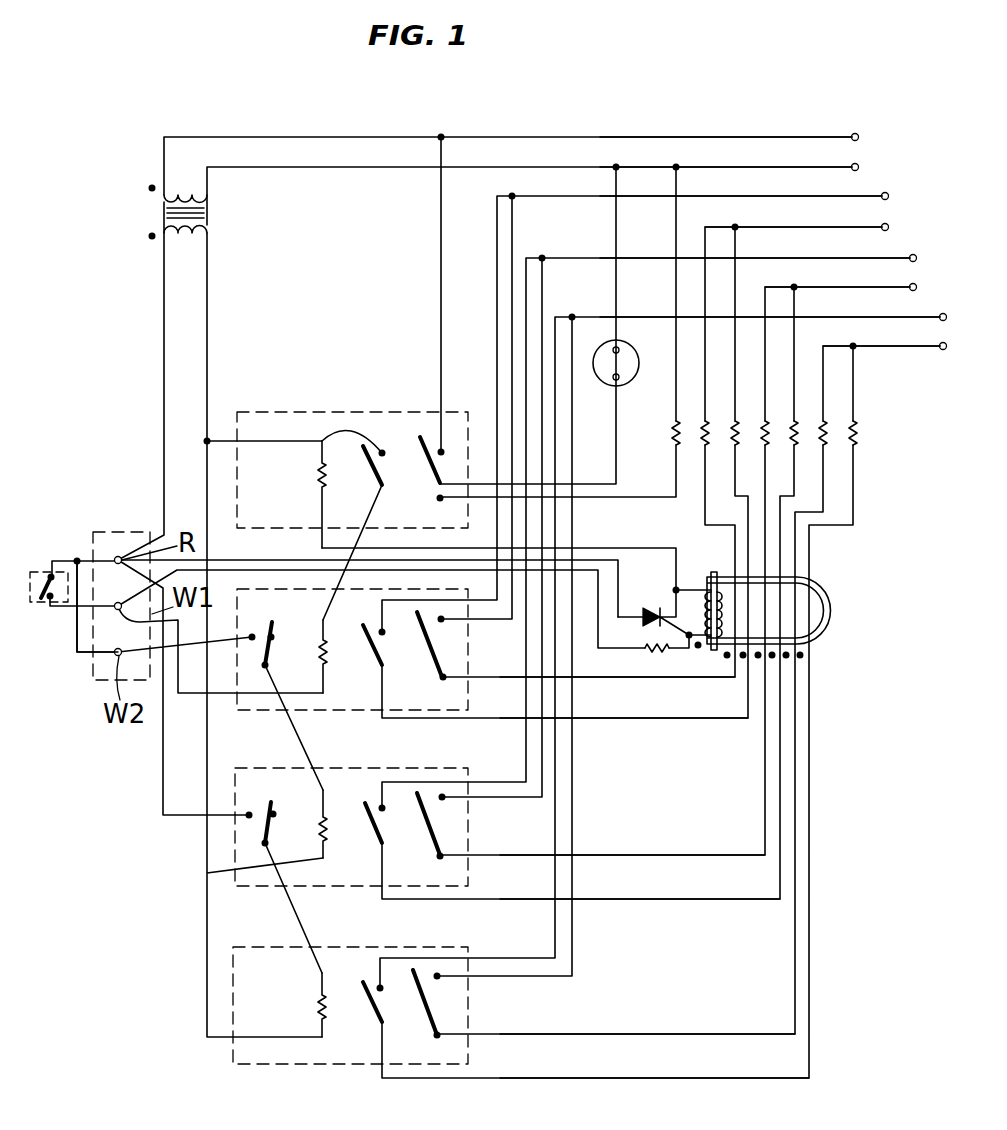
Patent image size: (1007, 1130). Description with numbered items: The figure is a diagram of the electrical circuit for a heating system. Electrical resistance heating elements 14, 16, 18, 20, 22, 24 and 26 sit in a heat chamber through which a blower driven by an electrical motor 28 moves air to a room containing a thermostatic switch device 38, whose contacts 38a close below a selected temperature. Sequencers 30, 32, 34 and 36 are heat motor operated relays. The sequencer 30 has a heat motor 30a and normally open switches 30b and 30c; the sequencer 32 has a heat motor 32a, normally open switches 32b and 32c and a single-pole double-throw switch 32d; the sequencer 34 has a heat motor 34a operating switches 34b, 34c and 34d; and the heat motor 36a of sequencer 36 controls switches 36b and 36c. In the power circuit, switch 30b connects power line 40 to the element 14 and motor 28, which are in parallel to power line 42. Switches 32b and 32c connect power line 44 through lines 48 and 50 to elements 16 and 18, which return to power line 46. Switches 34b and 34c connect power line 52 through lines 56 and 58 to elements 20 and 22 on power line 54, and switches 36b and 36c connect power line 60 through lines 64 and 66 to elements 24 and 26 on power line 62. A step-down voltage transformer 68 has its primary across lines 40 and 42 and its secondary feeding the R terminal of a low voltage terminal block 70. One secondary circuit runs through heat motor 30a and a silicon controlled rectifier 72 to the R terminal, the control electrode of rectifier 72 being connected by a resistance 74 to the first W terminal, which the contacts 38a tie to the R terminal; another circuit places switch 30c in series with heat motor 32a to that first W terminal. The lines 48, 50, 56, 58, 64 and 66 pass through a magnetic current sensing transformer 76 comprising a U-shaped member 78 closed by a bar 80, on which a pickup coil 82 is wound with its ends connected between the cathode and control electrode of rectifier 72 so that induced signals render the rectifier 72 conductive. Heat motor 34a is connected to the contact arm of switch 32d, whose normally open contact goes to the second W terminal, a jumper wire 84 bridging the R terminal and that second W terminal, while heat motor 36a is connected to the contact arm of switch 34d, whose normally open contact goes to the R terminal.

The electrical resistance heating element 14 is at (676, 432).
The electrical resistance heating element 16 is at (705, 422).
The electrical resistance heating element 18 is at (735, 422).
The electrical resistance heating element 20 is at (765, 440).
The electrical resistance heating element 22 is at (794, 422).
The electrical resistance heating element 24 is at (823, 442).
The electrical resistance heating element 26 is at (853, 430).
The electrical motor 28 is at (635, 369).
The sequencer 30 is at (318, 412).
The heat motor 30a is at (314, 469).
The normally open switch 30b is at (427, 433).
The normally open switch 30c is at (377, 430).
The sequencer 32 is at (295, 578).
The heat motor 32a is at (314, 657).
The normally open switch 32b is at (455, 648).
The normally open switch 32c is at (388, 669).
The single-pole double-throw switch 32d is at (284, 642).
The sequencer 34 is at (365, 770).
The heat motor 34a is at (313, 809).
The switch 34b is at (416, 834).
The switch 34c is at (364, 840).
The switch 34d is at (279, 831).
The sequencer 36 is at (378, 945).
The heat motor 36a is at (304, 1007).
The switch 36b is at (445, 1007).
The switch 36c is at (390, 1014).
The thermostatic switch device 38 is at (37, 572).
The thermostat contacts 38a is at (30, 597).
The power line 40 is at (739, 137).
The power line 42 is at (746, 148).
The power line 44 is at (768, 178).
The power line 46 is at (788, 208).
The line 48 is at (607, 679).
The line 50 is at (613, 722).
The power line 52 is at (826, 238).
The power line 54 is at (844, 268).
The line 56 is at (647, 835).
The line 58 is at (668, 880).
The power line 60 is at (863, 298).
The power line 62 is at (878, 346).
The line 64 is at (672, 1010).
The line 66 is at (666, 1056).
The step-down voltage transformer 68 is at (204, 212).
The low voltage terminal block 70 is at (125, 532).
The silicon controlled rectifier 72 is at (644, 608).
The resistance 74 is at (660, 644).
The magnetic current sensing transformer 76 is at (823, 656).
The U-shaped member 78 is at (820, 584).
The bar 80 is at (715, 570).
The pickup coil 82 is at (722, 622).
The jumper wire 84 is at (80, 655).